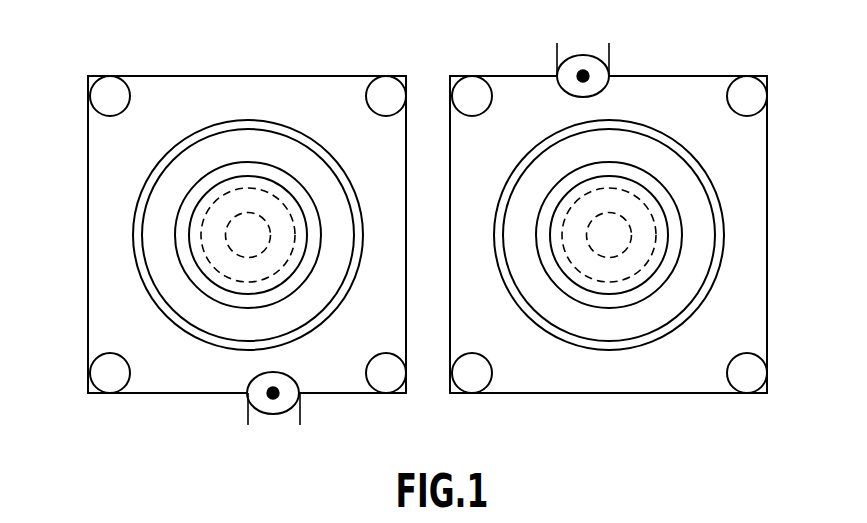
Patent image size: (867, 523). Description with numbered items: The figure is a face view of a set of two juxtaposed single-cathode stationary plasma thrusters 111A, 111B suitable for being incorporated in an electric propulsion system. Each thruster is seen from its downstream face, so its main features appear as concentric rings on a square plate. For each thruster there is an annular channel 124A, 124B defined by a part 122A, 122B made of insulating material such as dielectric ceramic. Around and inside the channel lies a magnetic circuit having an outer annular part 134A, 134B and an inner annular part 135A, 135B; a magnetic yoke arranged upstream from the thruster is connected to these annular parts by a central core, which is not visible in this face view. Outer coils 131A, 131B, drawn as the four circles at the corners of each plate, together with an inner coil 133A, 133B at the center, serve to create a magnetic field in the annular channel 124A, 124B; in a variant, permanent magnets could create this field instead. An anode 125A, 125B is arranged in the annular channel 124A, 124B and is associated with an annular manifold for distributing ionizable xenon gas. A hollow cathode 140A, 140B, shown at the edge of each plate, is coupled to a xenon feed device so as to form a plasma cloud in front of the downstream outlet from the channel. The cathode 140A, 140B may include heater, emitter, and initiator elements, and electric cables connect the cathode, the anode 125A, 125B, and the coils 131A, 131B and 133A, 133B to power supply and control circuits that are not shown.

The single-cathode stationary plasma thruster 111A is at (80, 347).
The single-cathode stationary plasma thruster 111B is at (764, 347).
The part made of insulating material 122A is at (202, 184).
The part made of insulating material 122B is at (654, 185).
The annular channel 124A is at (272, 143).
The annular channel 124B is at (587, 325).
The anode 125A is at (160, 203).
The anode 125B is at (697, 205).
The outer coils 131A is at (110, 97).
The outer coils 131B is at (477, 97).
The inner coil 133A is at (195, 239).
The inner coil 133B is at (662, 240).
The outer annular part 134A is at (340, 107).
The outer annular part 134B is at (515, 107).
The inner annular part 135A is at (215, 220).
The inner annular part 135B is at (642, 220).
The hollow cathode 140A is at (285, 400).
The hollow cathode 140B is at (587, 63).